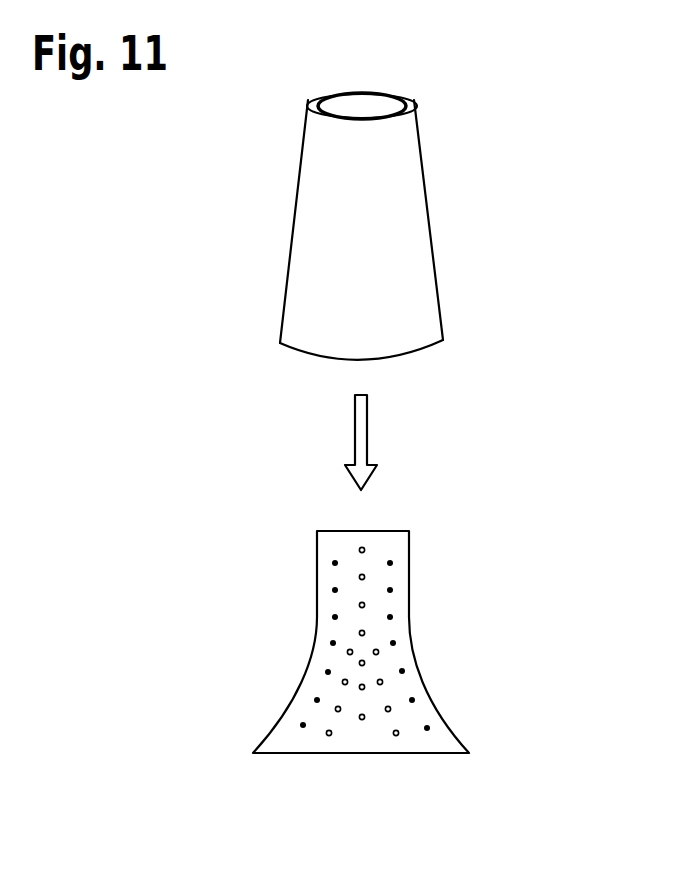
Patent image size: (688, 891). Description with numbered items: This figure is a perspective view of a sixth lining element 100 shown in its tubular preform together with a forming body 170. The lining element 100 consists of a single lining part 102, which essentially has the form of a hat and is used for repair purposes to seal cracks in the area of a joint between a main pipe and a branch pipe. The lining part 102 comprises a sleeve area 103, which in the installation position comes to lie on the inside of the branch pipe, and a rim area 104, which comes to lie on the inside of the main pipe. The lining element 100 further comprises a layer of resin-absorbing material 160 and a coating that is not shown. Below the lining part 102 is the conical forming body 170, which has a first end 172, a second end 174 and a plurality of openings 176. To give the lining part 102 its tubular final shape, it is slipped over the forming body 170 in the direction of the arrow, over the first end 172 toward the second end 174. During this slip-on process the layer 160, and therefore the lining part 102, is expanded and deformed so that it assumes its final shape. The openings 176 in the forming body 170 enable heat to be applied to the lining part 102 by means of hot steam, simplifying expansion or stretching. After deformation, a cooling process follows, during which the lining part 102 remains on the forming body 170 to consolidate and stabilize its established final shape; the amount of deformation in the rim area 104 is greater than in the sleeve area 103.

The lining element 100 is at (520, 182).
The lining part 102 is at (440, 290).
The sleeve area 103 is at (325, 129).
The rim area 104 is at (296, 338).
The layer of resin-absorbing material 160 is at (393, 100).
The forming body 170 is at (423, 570).
The first end 172 is at (328, 542).
The second end 174 is at (262, 744).
The openings 176 is at (342, 682).